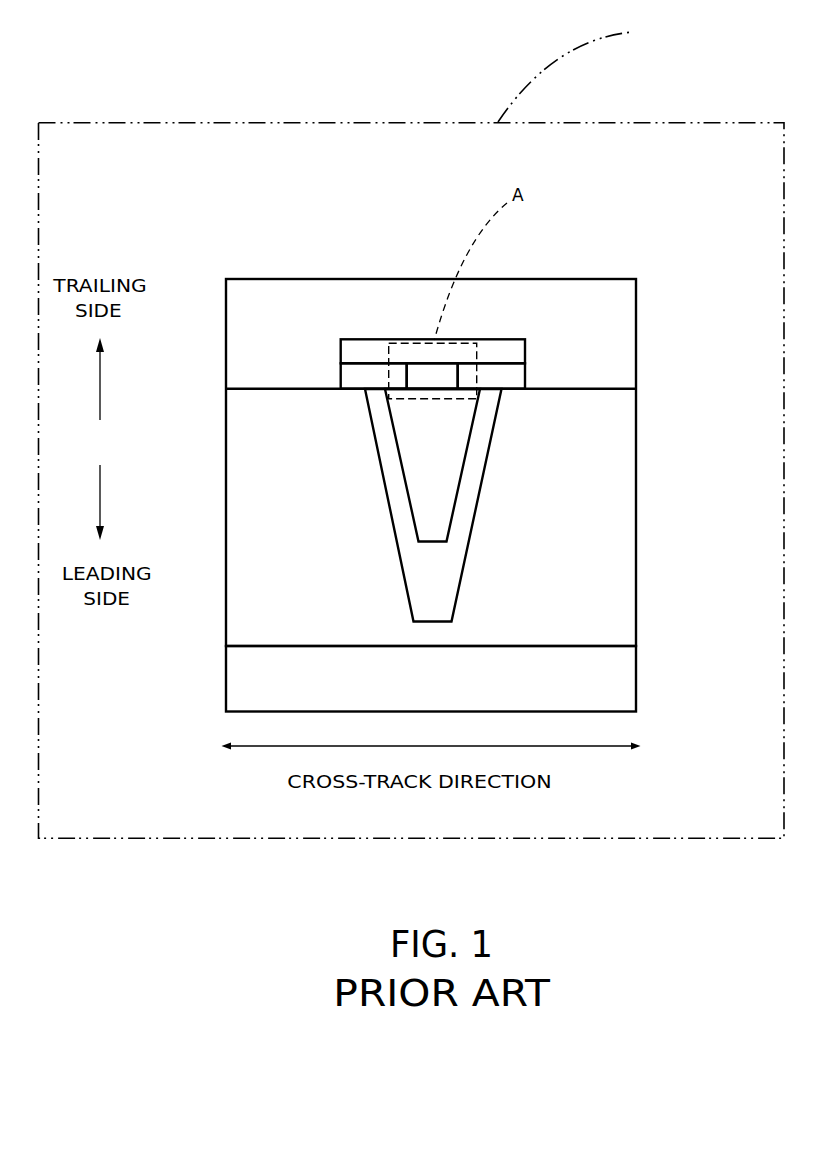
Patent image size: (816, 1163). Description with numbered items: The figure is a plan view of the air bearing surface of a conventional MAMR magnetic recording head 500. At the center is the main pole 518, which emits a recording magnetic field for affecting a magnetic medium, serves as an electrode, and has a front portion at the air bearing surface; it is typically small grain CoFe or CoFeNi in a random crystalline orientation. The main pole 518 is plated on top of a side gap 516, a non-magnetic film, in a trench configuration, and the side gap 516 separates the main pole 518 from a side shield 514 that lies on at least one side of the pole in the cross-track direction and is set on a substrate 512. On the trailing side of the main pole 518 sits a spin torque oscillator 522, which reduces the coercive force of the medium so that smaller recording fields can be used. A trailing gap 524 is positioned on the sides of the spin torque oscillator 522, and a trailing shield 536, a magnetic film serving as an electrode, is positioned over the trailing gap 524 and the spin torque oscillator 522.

The MAMR magnetic recording head 500 is at (250, 61).
The substrate 512 is at (447, 693).
The side shield 514 is at (570, 530).
The side gap 516 is at (448, 587).
The main pole 518 is at (448, 450).
The spin torque oscillator 522 is at (445, 385).
The trailing gap 524 is at (353, 373).
The trailing shield 536 is at (491, 354).